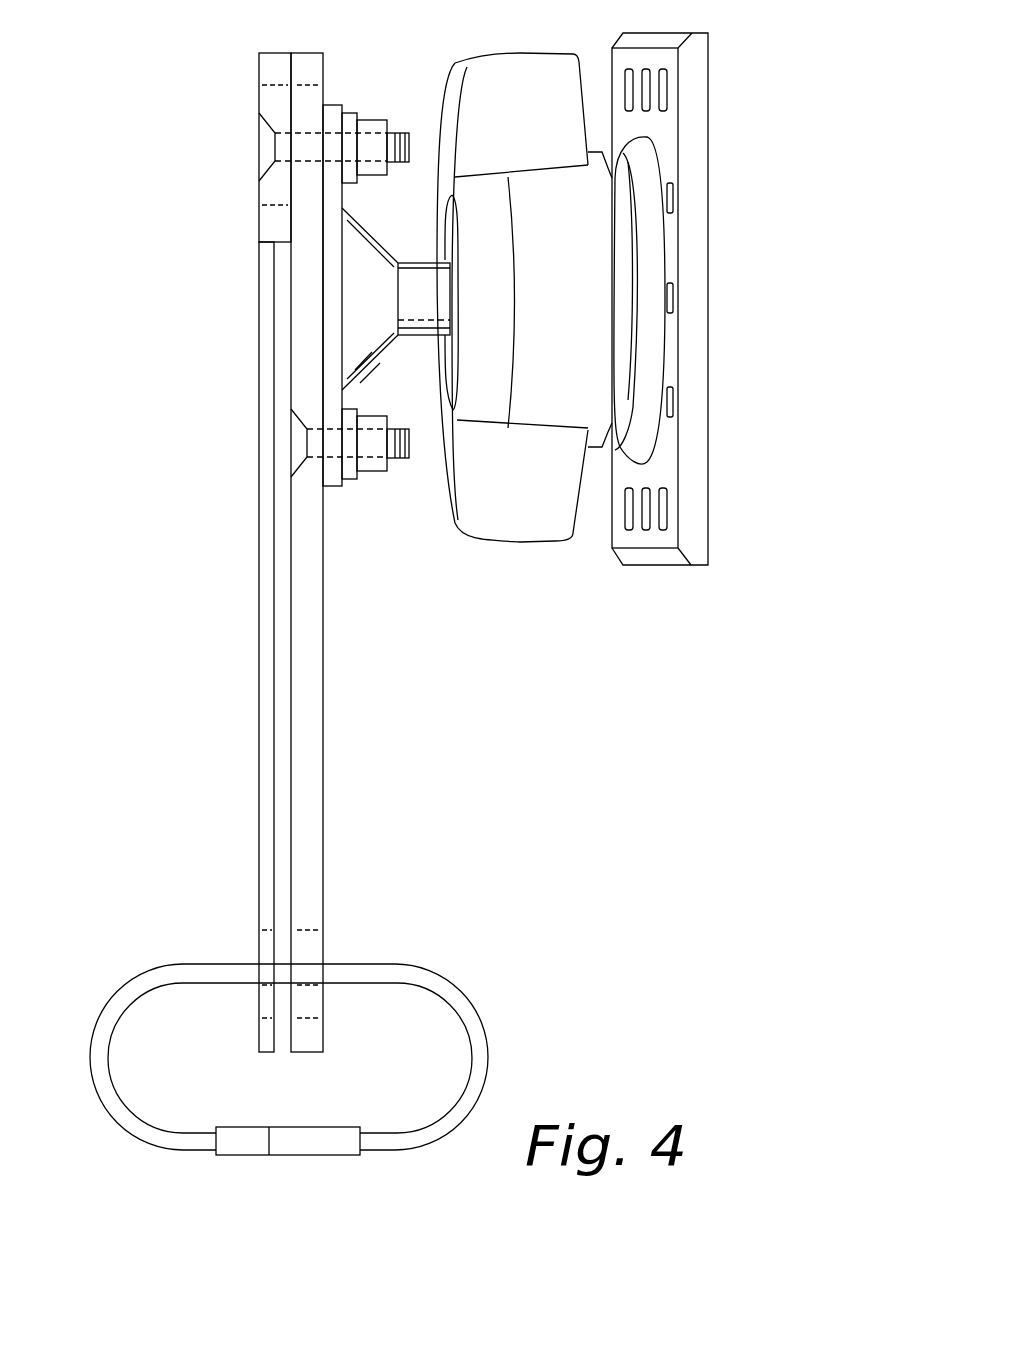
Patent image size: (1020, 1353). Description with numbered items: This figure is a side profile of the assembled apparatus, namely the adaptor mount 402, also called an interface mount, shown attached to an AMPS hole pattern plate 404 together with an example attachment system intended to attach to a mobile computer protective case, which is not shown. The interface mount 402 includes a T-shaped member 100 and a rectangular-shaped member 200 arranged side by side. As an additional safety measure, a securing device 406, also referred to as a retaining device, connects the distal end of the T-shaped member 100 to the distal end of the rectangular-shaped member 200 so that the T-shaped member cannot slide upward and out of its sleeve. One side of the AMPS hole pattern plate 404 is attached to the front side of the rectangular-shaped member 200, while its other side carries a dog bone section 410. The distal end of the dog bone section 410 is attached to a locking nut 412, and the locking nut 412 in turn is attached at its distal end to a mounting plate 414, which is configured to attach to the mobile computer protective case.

The T-shaped member 100 is at (277, 190).
The rectangular-shaped member 200 is at (305, 752).
The adaptor mount 402 is at (328, 37).
The AMPS hole pattern plate 404 is at (333, 104).
The securing device 406 is at (478, 1048).
The dog bone section 410 is at (422, 293).
The locking nut 412 is at (525, 520).
The mounting plate 414 is at (690, 400).